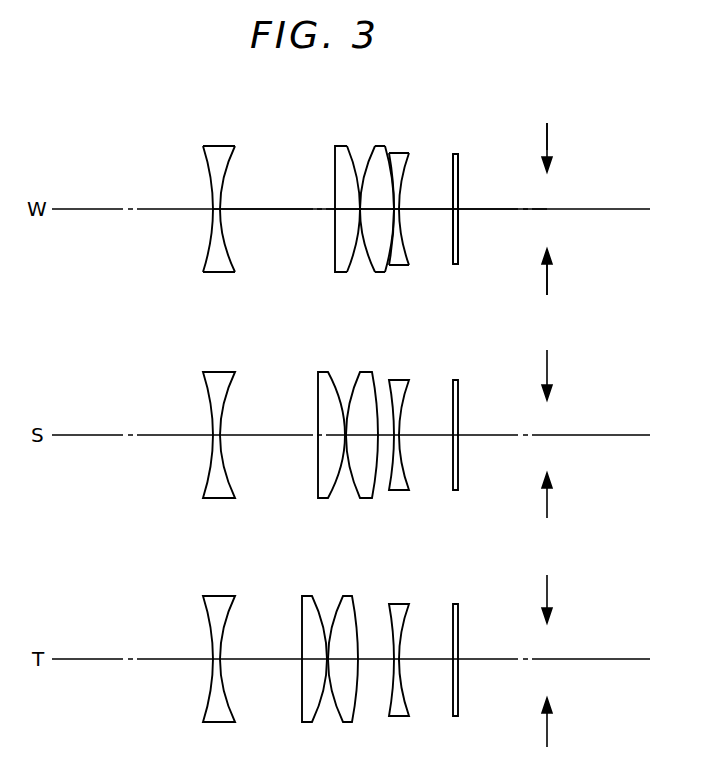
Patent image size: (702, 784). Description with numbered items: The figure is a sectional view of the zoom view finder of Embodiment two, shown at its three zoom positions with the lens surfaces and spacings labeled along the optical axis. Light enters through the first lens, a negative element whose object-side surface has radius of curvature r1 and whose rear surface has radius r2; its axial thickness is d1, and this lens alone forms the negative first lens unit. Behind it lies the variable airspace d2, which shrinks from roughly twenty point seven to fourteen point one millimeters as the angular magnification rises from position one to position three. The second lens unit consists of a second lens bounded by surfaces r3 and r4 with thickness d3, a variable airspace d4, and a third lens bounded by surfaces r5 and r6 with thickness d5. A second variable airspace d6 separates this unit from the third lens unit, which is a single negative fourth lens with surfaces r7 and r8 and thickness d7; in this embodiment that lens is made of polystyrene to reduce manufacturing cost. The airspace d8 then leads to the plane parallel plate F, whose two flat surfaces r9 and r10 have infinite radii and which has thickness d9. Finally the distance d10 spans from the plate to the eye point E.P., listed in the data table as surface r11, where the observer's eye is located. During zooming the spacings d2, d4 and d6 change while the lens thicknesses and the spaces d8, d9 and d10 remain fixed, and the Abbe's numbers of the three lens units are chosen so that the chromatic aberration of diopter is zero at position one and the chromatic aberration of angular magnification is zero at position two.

The radius of curvature of first lens surface r1 is at (205, 157).
The radius of curvature of second lens surface r2 is at (237, 158).
The radius of curvature of third lens surface r3 is at (334, 160).
The radius of curvature of fourth lens surface r4 is at (352, 162).
The radius of curvature of fifth lens surface r5 is at (366, 165).
The radius of curvature of sixth lens surface r6 is at (384, 162).
The radius of curvature of seventh lens surface r7 is at (392, 165).
The radius of curvature of eighth lens surface r8 is at (408, 165).
The radius of curvature of ninth surface r9 is at (452, 162).
The radius of curvature of tenth surface r10 is at (460, 162).
The eye point surface r11 is at (547, 133).
The thickness of first lens d1 is at (213, 212).
The variable airspace between first and second lenses d2 is at (267, 212).
The thickness of second lens d3 is at (334, 215).
The variable airspace between second and third lenses d4 is at (360, 206).
The thickness of third lens d5 is at (364, 248).
The variable airspace between third and fourth lenses d6 is at (400, 217).
The thickness of fourth lens d7 is at (398, 207).
The airspace between fourth lens and plane parallel plate d8 is at (445, 213).
The thickness of plane parallel plate d9 is at (459, 217).
The distance from plane parallel plate to eye point d10 is at (478, 208).
The plane parallel plate F is at (458, 256).
The eye point E.P. is at (547, 277).